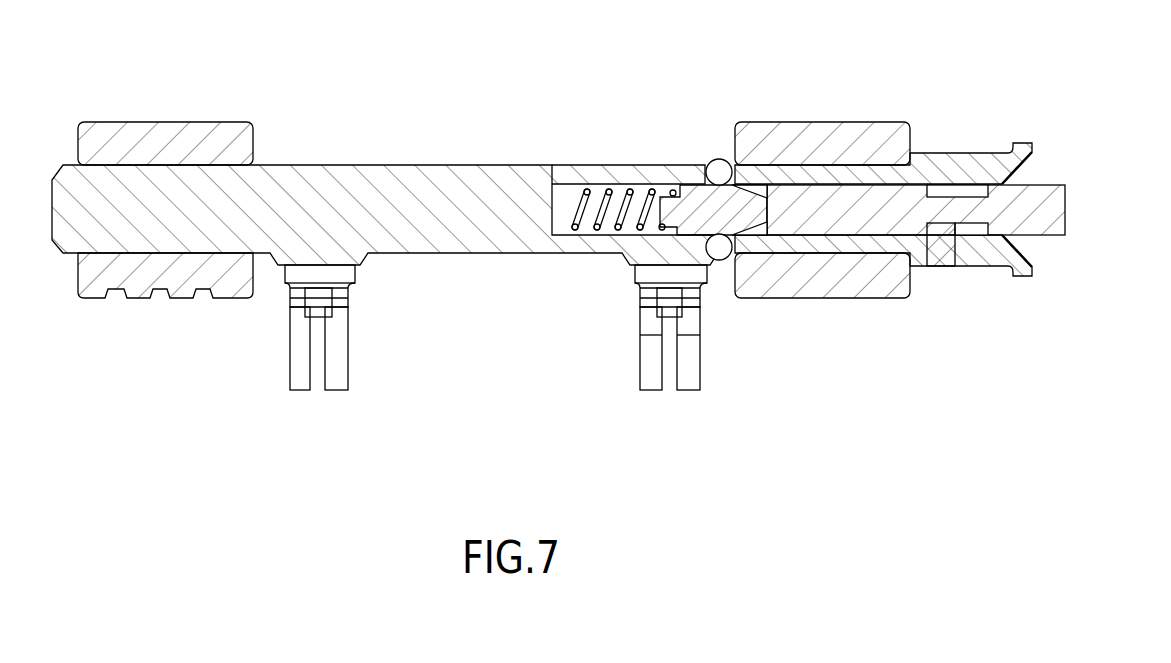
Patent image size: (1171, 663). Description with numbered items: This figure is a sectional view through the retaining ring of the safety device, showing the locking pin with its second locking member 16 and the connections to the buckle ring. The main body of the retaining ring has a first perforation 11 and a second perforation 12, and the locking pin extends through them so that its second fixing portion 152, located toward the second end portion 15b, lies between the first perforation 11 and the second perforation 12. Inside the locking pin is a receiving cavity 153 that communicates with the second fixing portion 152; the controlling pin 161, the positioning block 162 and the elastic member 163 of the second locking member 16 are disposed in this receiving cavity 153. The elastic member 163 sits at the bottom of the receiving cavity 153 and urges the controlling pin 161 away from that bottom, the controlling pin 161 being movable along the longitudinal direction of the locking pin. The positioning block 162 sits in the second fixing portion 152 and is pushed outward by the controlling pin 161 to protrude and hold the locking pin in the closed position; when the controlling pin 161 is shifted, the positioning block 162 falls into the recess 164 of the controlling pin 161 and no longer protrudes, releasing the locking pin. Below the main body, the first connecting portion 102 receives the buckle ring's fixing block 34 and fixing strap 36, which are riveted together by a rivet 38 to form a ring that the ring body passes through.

The first perforation 11 is at (259, 162).
The second perforation 12 is at (726, 157).
The second fixing portion 152 is at (702, 160).
The elastic member 163 is at (579, 200).
The second end portion 15b is at (947, 160).
The receiving cavity 153 is at (1037, 165).
The second locking member 16 is at (906, 169).
The controlling pin 161 is at (1064, 198).
The recess 164 is at (764, 184).
The positioning block 162 is at (735, 172).
The first connecting portion 102 is at (357, 258).
The fixing block 34 is at (351, 288).
The rivet 38 is at (317, 303).
The fixing strap 36 is at (337, 367).